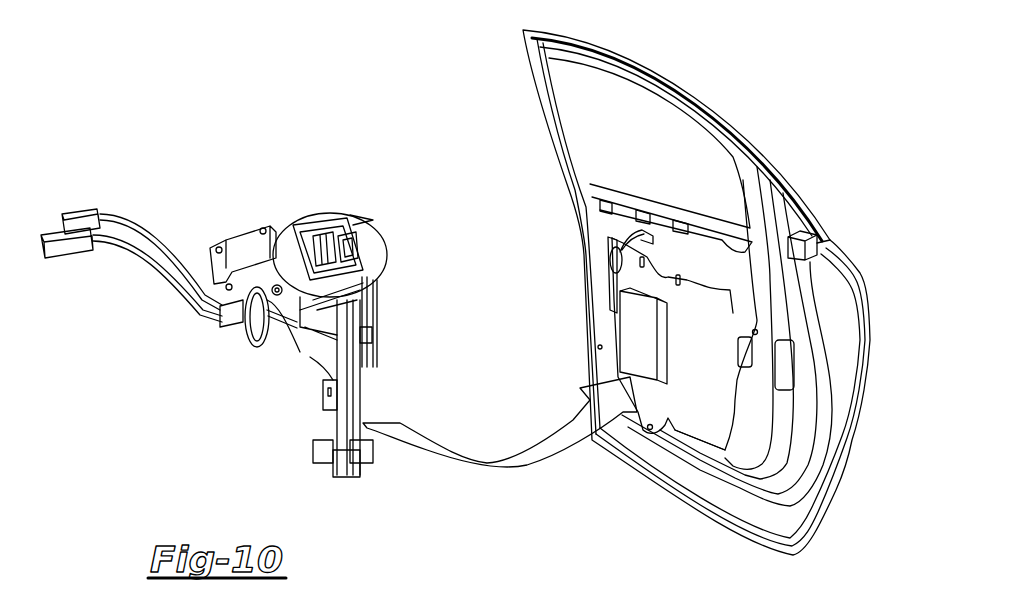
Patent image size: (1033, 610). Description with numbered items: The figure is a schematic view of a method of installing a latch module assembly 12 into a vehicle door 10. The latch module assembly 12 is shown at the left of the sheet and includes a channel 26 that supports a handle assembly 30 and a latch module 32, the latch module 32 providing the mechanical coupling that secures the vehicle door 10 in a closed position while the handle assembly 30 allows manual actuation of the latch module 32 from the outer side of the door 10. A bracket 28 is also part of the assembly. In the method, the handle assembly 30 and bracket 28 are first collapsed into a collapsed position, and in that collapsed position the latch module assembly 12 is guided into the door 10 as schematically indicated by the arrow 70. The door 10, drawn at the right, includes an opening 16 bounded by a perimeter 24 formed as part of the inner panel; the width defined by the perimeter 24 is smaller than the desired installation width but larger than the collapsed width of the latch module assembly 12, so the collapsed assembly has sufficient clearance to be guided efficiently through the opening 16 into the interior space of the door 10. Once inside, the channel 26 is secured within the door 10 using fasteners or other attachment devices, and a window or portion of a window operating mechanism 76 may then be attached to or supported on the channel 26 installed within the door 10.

The vehicle door 10 is at (762, 113).
The latch module assembly 12 is at (217, 190).
The opening 16 is at (683, 393).
The perimeter 24 is at (702, 456).
The channel 26 is at (340, 403).
The bracket 28 is at (300, 358).
The handle assembly 30 is at (358, 243).
The latch module 32 is at (377, 333).
The arrow 70 is at (510, 458).
The window operating mechanism 76 is at (633, 330).